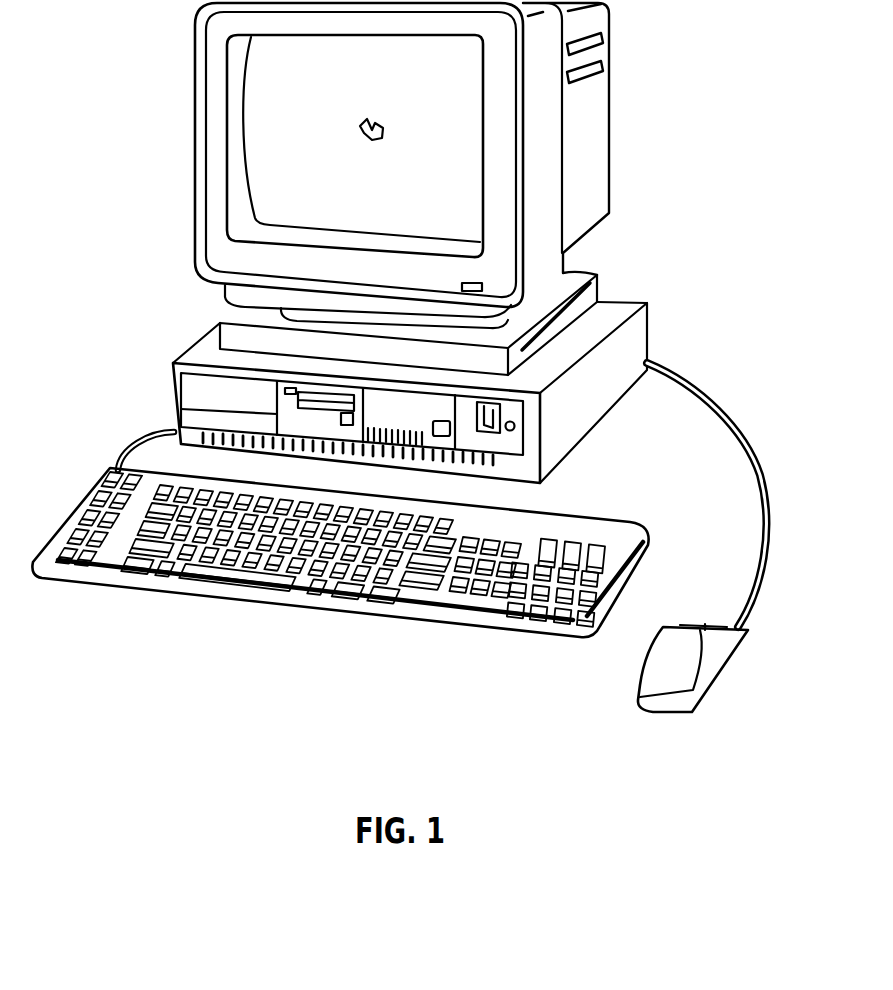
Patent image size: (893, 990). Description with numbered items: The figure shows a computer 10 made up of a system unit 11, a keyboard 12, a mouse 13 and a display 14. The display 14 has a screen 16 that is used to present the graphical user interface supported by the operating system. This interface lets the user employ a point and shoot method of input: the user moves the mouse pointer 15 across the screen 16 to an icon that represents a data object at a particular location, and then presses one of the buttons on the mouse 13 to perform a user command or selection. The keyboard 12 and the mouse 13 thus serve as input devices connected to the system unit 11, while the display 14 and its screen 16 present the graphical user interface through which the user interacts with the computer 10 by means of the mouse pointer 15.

The computer 10 is at (138, 224).
The system unit 11 is at (173, 382).
The keyboard 12 is at (67, 581).
The mouse 13 is at (735, 661).
The display 14 is at (196, 139).
The mouse pointer 15 is at (367, 119).
The screen 16 is at (325, 174).